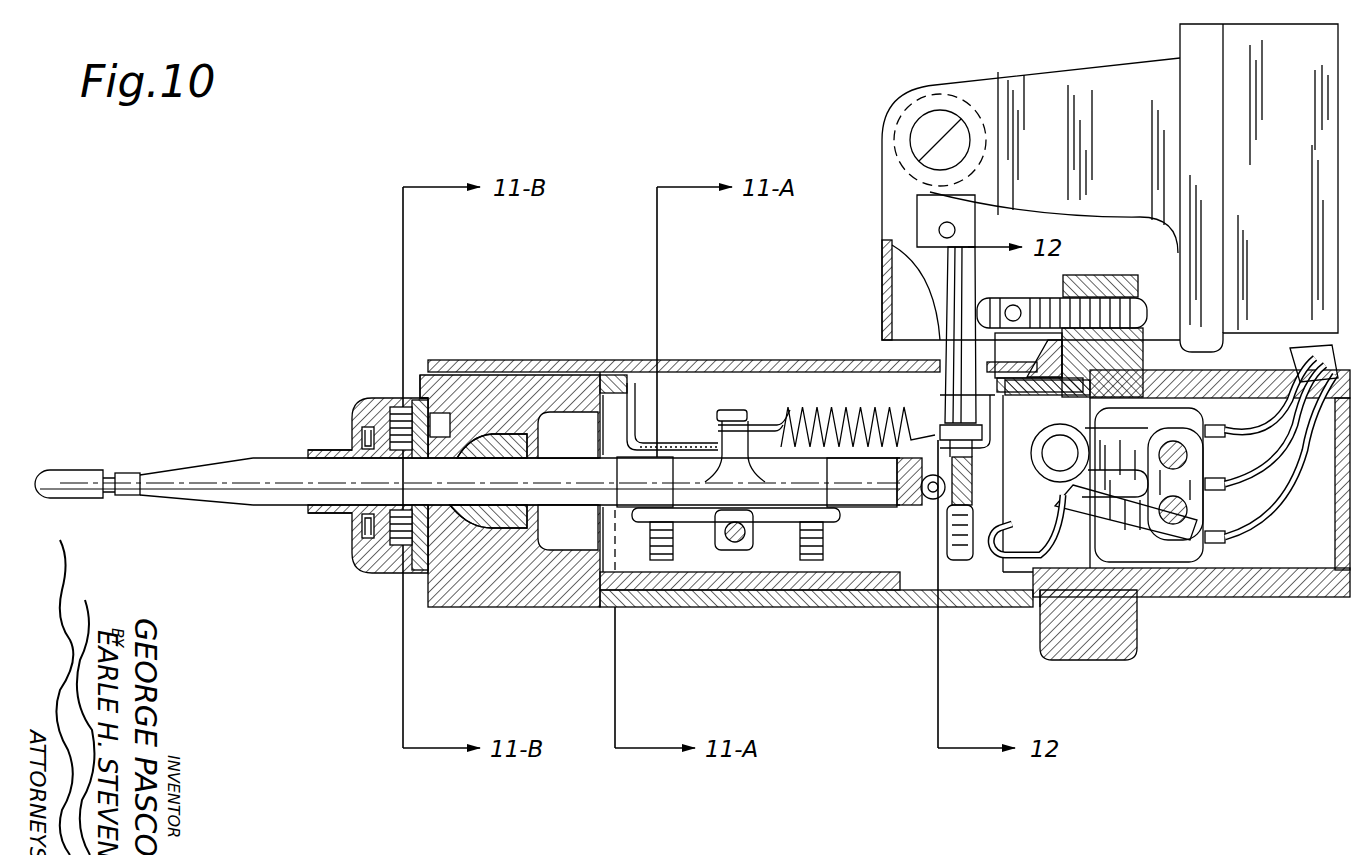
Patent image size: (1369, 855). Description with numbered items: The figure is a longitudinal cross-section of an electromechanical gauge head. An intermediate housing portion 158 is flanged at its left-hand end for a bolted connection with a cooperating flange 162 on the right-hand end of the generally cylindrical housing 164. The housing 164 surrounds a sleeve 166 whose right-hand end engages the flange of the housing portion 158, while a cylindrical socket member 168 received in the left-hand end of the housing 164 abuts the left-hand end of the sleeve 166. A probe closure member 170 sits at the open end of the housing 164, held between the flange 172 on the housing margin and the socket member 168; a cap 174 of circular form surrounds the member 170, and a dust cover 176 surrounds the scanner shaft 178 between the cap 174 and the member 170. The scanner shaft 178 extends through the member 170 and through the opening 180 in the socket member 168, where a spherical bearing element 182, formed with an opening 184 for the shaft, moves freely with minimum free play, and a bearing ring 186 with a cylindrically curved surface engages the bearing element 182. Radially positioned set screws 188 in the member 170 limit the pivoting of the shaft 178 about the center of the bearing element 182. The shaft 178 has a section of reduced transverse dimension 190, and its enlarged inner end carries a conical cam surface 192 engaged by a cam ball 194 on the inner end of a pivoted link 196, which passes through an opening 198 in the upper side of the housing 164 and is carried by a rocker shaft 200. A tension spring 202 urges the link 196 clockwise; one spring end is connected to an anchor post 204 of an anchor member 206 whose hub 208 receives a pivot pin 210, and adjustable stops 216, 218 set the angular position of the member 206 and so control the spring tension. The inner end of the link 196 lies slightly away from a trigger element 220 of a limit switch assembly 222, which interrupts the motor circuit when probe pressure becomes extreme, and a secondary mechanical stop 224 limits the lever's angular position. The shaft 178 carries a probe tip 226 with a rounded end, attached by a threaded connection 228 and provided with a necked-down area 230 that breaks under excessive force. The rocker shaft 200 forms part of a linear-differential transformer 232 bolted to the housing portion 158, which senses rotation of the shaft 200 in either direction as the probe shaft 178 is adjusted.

The intermediate housing portion 158 is at (1112, 660).
The cooperating flange 162 is at (1045, 660).
The housing 164 is at (920, 597).
The sleeve 166 is at (887, 598).
The cylindrical socket member 168 is at (497, 360).
The probe closure member 170 is at (423, 398).
The flange 172 is at (422, 380).
The cap 174 is at (362, 425).
The dust cover 176 is at (330, 450).
The scanner shaft 178 is at (262, 460).
The opening 180 is at (512, 434).
The spherical bearing element 182 is at (473, 607).
The opening 184 is at (580, 412).
The bearing ring 186 is at (410, 575).
The set screws 188 is at (383, 573).
The section of reduced transverse dimension 190 is at (683, 458).
The conical cam surface 192 is at (935, 455).
The cam ball 194 is at (926, 505).
The pivoted link 196 is at (942, 333).
The opening 198 is at (985, 347).
The rocker shaft 200 is at (886, 142).
The tension spring 202 is at (800, 422).
The anchor post 204 is at (742, 410).
The anchor member 206 is at (783, 567).
The hub 208 is at (760, 524).
The pivot pin 210 is at (735, 550).
The adjustable stop 216 is at (655, 562).
The adjustable stop 218 is at (823, 543).
The trigger element 220 is at (1008, 556).
The limit switch assembly 222 is at (1178, 552).
The secondary mechanical stop 224 is at (1040, 345).
The probe tip 226 is at (62, 472).
The threaded connection 228 is at (162, 475).
The necked-down area 230 is at (113, 472).
The linear-differential transformer 232 is at (1218, 45).